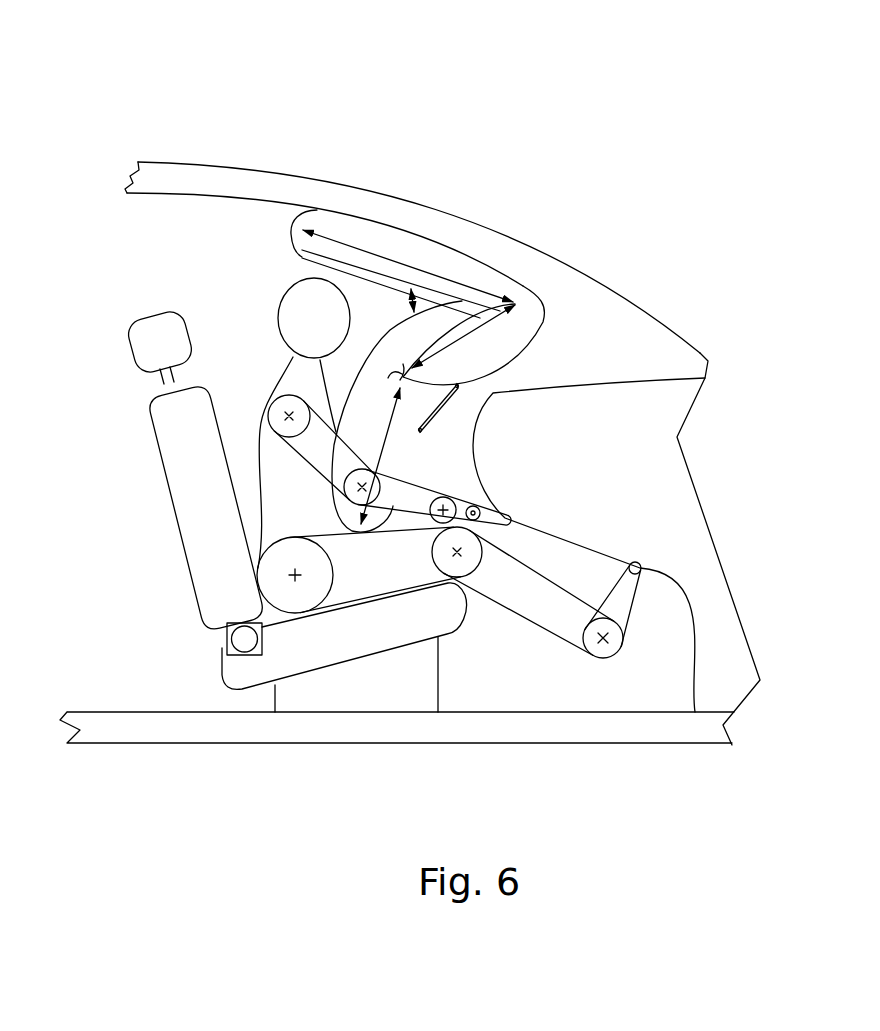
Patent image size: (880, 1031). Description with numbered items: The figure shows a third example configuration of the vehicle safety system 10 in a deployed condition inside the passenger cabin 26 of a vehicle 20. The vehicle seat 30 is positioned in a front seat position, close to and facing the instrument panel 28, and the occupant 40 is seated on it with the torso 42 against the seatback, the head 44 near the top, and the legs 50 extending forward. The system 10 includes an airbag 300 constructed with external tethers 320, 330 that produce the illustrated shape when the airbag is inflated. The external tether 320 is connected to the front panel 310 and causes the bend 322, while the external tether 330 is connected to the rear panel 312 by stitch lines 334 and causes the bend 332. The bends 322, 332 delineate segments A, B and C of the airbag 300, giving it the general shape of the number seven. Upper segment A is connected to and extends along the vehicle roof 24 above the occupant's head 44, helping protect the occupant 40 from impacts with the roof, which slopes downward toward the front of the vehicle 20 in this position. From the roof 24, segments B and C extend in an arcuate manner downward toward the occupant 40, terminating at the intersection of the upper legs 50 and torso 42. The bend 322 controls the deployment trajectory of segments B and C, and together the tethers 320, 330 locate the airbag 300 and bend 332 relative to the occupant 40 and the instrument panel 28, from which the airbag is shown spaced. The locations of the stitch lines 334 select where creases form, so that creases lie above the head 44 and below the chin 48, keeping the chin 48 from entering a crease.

The vehicle safety system 10 is at (445, 192).
The vehicle 20 is at (168, 118).
The vehicle roof 24 is at (488, 243).
The passenger cabin 26 is at (172, 242).
The instrument panel 28 is at (560, 455).
The vehicle seat 30 is at (289, 510).
The occupant 40 is at (399, 442).
The torso 42 is at (283, 502).
The head 44 is at (310, 294).
The chin 48 is at (323, 350).
The legs 50 is at (353, 573).
The airbag 300 is at (480, 341).
The front panel 310 is at (363, 348).
The rear panel 312 is at (507, 360).
The external tether 320 is at (432, 294).
The bend 322 is at (538, 297).
The external tether 330 is at (443, 407).
The bend 332 is at (386, 328).
The stitch lines 334 is at (459, 387).